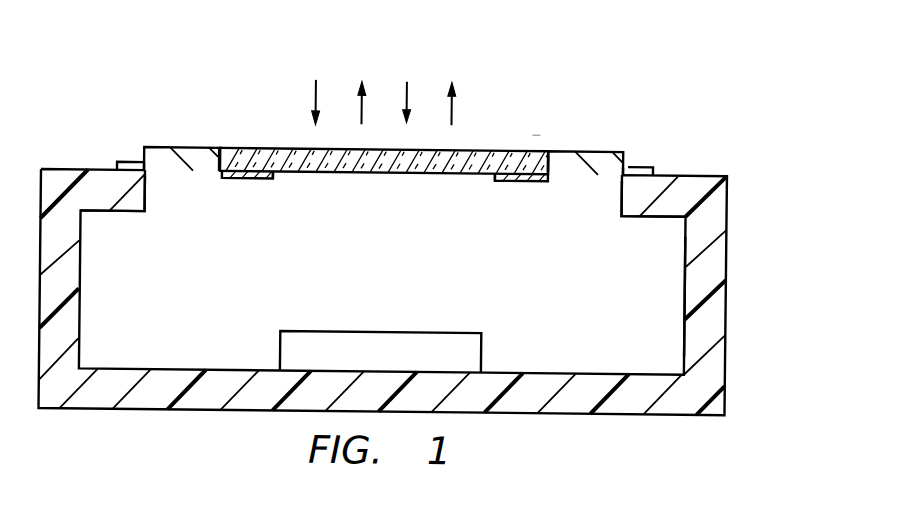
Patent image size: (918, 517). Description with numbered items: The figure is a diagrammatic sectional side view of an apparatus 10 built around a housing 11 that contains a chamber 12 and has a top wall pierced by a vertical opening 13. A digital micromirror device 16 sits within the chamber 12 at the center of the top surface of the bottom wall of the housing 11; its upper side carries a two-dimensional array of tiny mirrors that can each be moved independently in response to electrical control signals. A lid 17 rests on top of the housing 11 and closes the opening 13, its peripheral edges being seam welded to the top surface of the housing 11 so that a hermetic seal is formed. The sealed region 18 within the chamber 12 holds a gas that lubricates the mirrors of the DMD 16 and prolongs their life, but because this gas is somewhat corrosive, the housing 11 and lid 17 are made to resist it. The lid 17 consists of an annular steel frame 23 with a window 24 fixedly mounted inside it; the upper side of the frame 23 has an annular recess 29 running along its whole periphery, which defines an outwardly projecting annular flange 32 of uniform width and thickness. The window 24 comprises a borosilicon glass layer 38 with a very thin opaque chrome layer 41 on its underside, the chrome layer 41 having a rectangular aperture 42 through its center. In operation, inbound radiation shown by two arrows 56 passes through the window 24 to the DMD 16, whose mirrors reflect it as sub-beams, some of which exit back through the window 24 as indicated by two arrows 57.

The apparatus 10 is at (531, 60).
The housing 11 is at (727, 263).
The chamber 12 is at (686, 286).
The vertical opening 13 is at (145, 191).
The digital micromirror device 16 is at (380, 328).
The lid 17 is at (226, 106).
The region 18 is at (168, 302).
The annular metal frame 23 is at (192, 154).
The window 24 is at (527, 141).
The annular groove or recess 29 is at (127, 161).
The annular flange 32 is at (117, 162).
The glass layer 38 is at (282, 148).
The chrome layer 41 is at (238, 176).
The rectangular aperture 42 is at (273, 175).
The arrows representing inbound radiation 56 is at (313, 90).
The arrows representing outbound sub-beams 57 is at (452, 109).